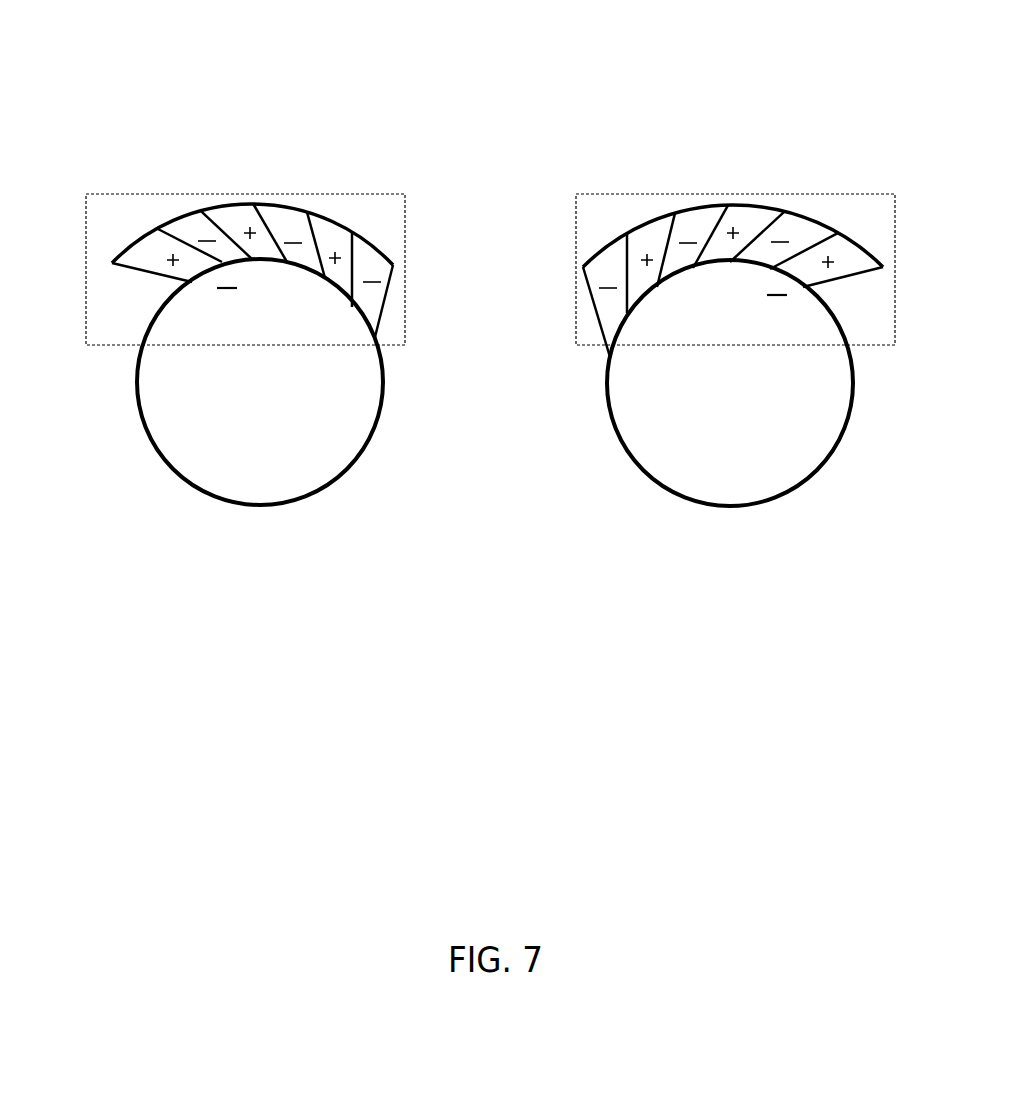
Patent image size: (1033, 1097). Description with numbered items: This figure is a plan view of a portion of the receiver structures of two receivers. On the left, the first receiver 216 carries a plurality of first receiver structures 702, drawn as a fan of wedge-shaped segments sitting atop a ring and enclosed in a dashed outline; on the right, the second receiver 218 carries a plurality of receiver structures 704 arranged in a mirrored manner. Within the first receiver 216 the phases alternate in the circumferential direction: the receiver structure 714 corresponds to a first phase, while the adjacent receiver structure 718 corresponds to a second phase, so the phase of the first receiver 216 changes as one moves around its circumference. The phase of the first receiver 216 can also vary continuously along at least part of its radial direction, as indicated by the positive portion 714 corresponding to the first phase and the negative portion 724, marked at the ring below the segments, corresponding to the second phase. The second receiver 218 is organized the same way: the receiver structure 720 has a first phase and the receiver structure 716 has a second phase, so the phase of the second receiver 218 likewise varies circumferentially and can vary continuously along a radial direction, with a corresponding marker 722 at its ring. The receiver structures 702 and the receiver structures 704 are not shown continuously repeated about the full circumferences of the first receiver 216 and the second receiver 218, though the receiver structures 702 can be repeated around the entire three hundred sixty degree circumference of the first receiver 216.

The first receiver 216 is at (250, 119).
The second receiver 218 is at (723, 118).
The first receiver structures 702 is at (370, 194).
The receiver structures 704 is at (627, 196).
The receiver structure 714 is at (112, 265).
The receiver structure 716 is at (883, 267).
The receiver structure 718 is at (182, 213).
The receiver structure 720 is at (803, 213).
The pole marker 722 is at (777, 297).
The portion 724 is at (226, 290).